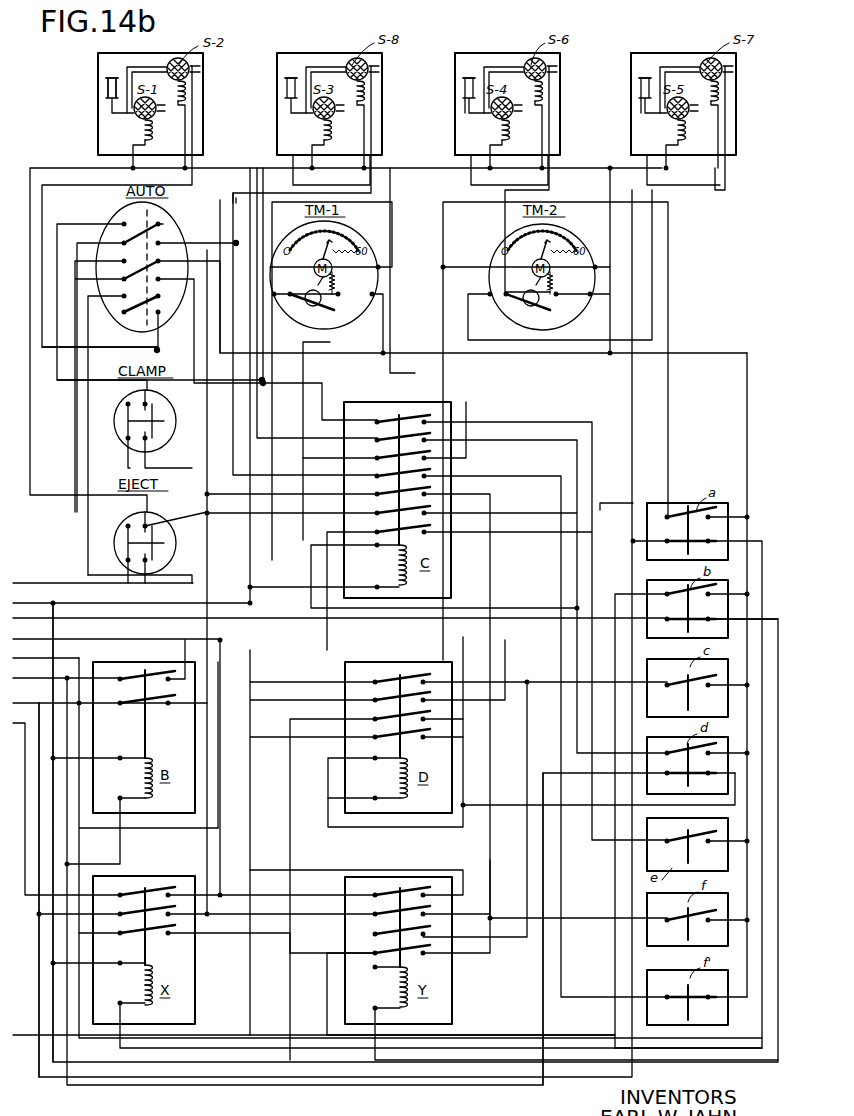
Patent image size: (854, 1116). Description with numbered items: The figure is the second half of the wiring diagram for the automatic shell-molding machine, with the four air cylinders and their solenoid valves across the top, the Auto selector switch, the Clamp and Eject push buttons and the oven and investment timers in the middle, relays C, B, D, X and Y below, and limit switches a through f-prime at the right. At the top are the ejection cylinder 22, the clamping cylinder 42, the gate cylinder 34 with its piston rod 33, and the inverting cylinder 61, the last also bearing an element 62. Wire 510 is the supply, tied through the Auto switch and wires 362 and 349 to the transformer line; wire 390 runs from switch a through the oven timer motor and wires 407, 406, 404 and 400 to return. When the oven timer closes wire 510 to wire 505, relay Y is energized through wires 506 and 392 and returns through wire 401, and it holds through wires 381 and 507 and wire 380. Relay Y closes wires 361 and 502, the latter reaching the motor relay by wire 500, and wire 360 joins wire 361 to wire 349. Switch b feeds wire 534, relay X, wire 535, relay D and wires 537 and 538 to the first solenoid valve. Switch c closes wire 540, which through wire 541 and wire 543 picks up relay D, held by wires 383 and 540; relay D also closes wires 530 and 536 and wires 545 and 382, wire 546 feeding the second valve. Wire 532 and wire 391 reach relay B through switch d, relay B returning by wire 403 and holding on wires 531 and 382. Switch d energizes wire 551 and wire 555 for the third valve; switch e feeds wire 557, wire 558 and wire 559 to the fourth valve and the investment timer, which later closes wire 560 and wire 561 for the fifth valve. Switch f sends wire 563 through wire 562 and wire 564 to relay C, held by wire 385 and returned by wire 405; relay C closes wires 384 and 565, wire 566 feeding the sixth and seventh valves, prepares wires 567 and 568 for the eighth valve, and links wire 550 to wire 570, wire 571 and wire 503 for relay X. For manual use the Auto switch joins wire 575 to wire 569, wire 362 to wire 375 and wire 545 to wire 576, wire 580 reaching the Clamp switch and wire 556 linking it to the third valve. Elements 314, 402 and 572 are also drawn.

The cylinder 22 is at (104, 95).
The clamping cylinder 42 is at (284, 80).
The piston rod 33 is at (464, 114).
The cylinder 34 is at (462, 78).
The cylinder 61 is at (640, 78).
The actuating element 62 is at (640, 114).
The conductor 314 is at (69, 799).
The wire 349 is at (104, 631).
The wire 360 is at (226, 876).
The wire 361 is at (315, 885).
The wire 362 is at (85, 632).
The wire 375 is at (196, 331).
The wire 380 is at (207, 864).
The wire 381 is at (262, 902).
The wire 382 is at (292, 687).
The wire 383 is at (292, 665).
The wire 384 is at (319, 501).
The wire 385 is at (319, 483).
The wire 390 is at (675, 212).
The wire 391 is at (128, 836).
The wire 392 is at (576, 840).
The wire 400 is at (103, 602).
The wire 401 is at (60, 652).
The relay coil 402 is at (117, 947).
The wire 403 is at (115, 742).
The wire 404 is at (250, 178).
The wire 405 is at (292, 579).
The wire 406 is at (414, 166).
The wire 407 is at (392, 240).
The wire 500 is at (73, 671).
The wire 502 is at (454, 866).
The wire 503 is at (760, 532).
The wire 505 is at (268, 603).
The wire 506 is at (348, 614).
The wire 507 is at (268, 623).
The wire 510 is at (760, 460).
The wire 530 is at (231, 743).
The wire 531 is at (115, 689).
The wire 532 is at (725, 786).
The wire 534 is at (615, 1021).
The wire 535 is at (314, 816).
The wire 536 is at (367, 727).
The wire 537 is at (322, 615).
The wire 538 is at (75, 148).
The wire 540 is at (599, 674).
The wire 541 is at (527, 696).
The wire 543 is at (367, 835).
The wire 545 is at (518, 378).
The wire 546 is at (203, 102).
The wire 550 is at (428, 558).
The wire 551 is at (529, 592).
The wire 555 is at (293, 138).
The wire 556 is at (177, 390).
The wire 557 is at (537, 632).
The wire 558 is at (475, 180).
The wire 559 is at (482, 256).
The wire 560 is at (463, 468).
The wire 561 is at (640, 144).
The wire 562 is at (475, 735).
The wire 563 is at (592, 907).
The wire 564 is at (298, 948).
The wire 565 is at (636, 280).
The wire 566 is at (558, 101).
The wire 567 is at (572, 958).
The wire 568 is at (358, 99).
The wire 569 is at (207, 244).
The wire 570 is at (636, 1038).
The wire 571 is at (622, 520).
The relay contact 572 is at (112, 901).
The wire 575 is at (96, 299).
The wire 576 is at (92, 333).
The wire 580 is at (174, 457).